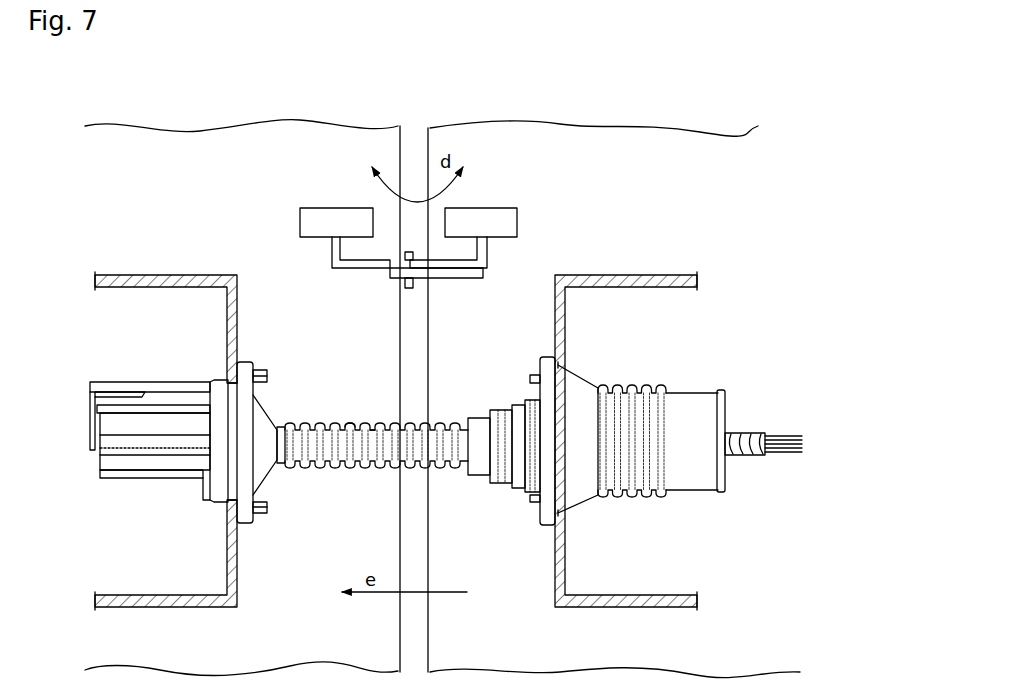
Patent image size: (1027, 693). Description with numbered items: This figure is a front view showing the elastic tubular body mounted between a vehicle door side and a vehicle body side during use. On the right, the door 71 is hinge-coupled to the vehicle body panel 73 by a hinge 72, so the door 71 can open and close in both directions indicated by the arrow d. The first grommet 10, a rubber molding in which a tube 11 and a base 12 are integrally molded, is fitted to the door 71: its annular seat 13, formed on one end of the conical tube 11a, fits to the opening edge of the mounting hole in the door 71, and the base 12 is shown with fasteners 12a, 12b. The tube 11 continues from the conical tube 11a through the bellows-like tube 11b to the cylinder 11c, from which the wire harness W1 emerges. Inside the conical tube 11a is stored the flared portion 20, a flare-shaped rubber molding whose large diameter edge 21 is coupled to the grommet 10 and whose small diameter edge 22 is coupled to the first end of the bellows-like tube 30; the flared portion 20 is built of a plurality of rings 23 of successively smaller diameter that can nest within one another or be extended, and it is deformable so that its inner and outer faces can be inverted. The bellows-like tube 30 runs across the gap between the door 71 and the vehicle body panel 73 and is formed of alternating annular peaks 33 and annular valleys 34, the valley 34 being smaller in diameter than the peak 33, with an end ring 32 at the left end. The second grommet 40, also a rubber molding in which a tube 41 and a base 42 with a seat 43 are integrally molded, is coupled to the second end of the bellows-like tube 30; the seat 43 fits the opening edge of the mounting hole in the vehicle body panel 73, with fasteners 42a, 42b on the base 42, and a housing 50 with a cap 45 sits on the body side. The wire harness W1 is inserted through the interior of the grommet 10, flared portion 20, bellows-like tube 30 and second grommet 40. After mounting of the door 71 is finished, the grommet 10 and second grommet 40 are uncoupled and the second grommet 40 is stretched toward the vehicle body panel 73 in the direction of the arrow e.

The first grommet 10 is at (613, 306).
The tube 11 is at (641, 412).
The conical tube 11a is at (585, 378).
The bellows-like tube 11b is at (633, 385).
The cylinder 11c is at (695, 417).
The base 12 is at (543, 340).
The fastening bolt 12a is at (533, 375).
The fastening bolt 12b is at (531, 502).
The annular seat 13 is at (560, 364).
The flared portion 20 is at (490, 396).
The large diameter edge 21 is at (530, 400).
The small diameter edge 22 is at (470, 420).
The rings 23 is at (492, 410).
The bellows-like tube 30 is at (338, 405).
The bellows end ring 32 is at (283, 464).
The annular peak 33 is at (348, 421).
The annular valley 34 is at (375, 422).
The second grommet 40 is at (213, 322).
The tube 41 is at (272, 400).
The base 42 is at (246, 338).
The fastening bolt 42a is at (262, 370).
The fastening bolt 42b is at (262, 514).
The seat 43 is at (230, 365).
The motor cap 45 is at (122, 382).
The motor 50 is at (128, 465).
The door 71 is at (600, 120).
The hinge 72 is at (408, 251).
The vehicle body panel 73 is at (292, 120).
The wire harness W1 is at (750, 432).